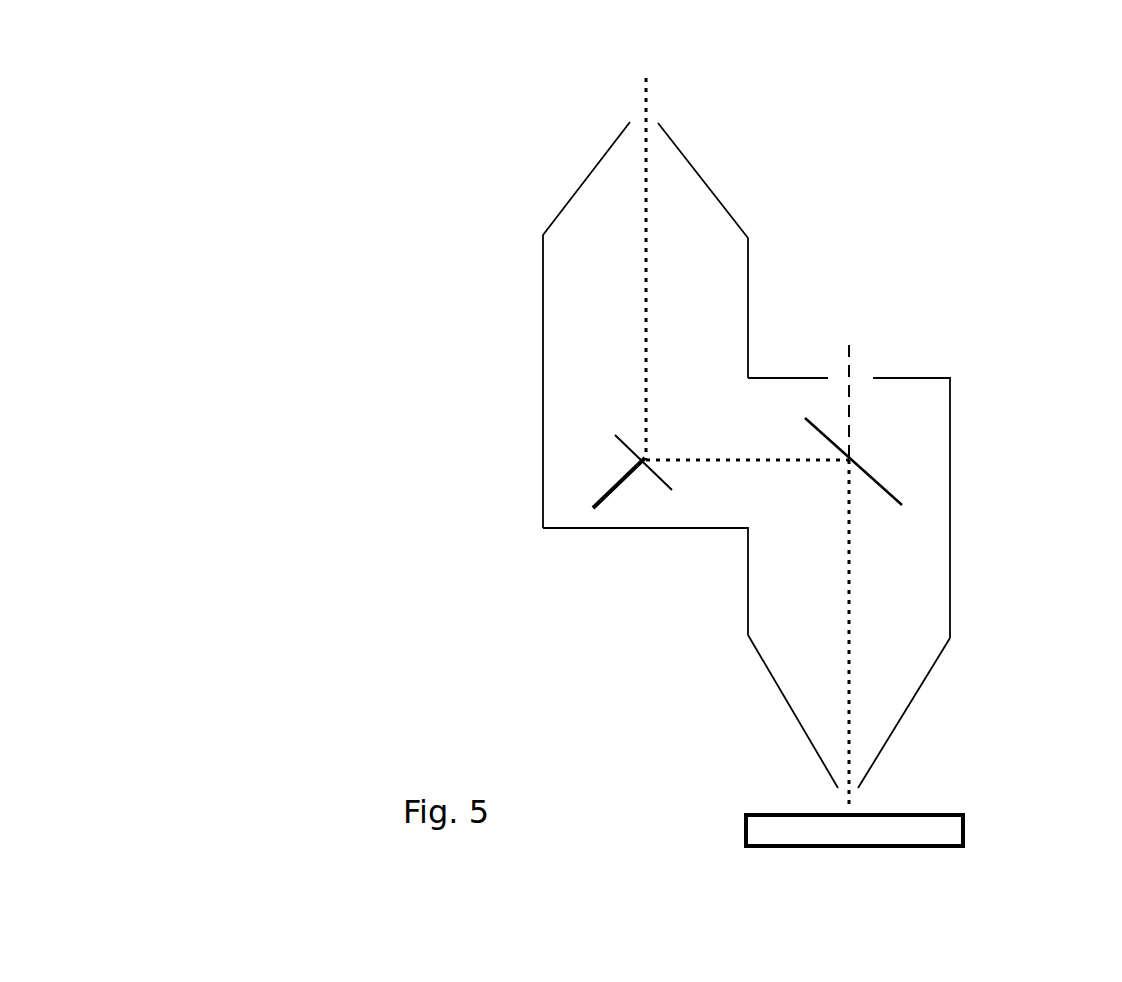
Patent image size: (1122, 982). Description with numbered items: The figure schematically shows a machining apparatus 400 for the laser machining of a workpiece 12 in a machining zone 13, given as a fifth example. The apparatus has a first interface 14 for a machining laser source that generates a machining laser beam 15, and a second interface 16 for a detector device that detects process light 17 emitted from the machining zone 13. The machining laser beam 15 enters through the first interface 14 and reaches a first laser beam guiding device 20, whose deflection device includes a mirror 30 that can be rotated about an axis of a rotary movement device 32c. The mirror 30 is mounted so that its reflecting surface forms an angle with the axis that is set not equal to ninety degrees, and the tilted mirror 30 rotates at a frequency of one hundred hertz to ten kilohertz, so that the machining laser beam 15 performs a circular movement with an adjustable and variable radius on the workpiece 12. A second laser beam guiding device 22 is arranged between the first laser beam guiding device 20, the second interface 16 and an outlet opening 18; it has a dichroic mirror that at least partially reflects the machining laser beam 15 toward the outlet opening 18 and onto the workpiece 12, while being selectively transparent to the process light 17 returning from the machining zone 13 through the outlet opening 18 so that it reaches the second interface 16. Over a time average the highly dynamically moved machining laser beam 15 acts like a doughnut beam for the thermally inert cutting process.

The machining apparatus 400 is at (394, 153).
The first interface 14 is at (658, 105).
The machining laser beam 15 is at (640, 103).
The second interface 16 is at (857, 349).
The process light 17 is at (851, 408).
The mirror 30 is at (617, 435).
The first laser beam guiding device 20 is at (578, 446).
The rotary movement device 32c is at (592, 507).
The second laser beam guiding device 22 is at (903, 476).
The outlet opening 18 is at (820, 794).
The machining zone 13 is at (866, 808).
The workpiece 12 is at (963, 825).